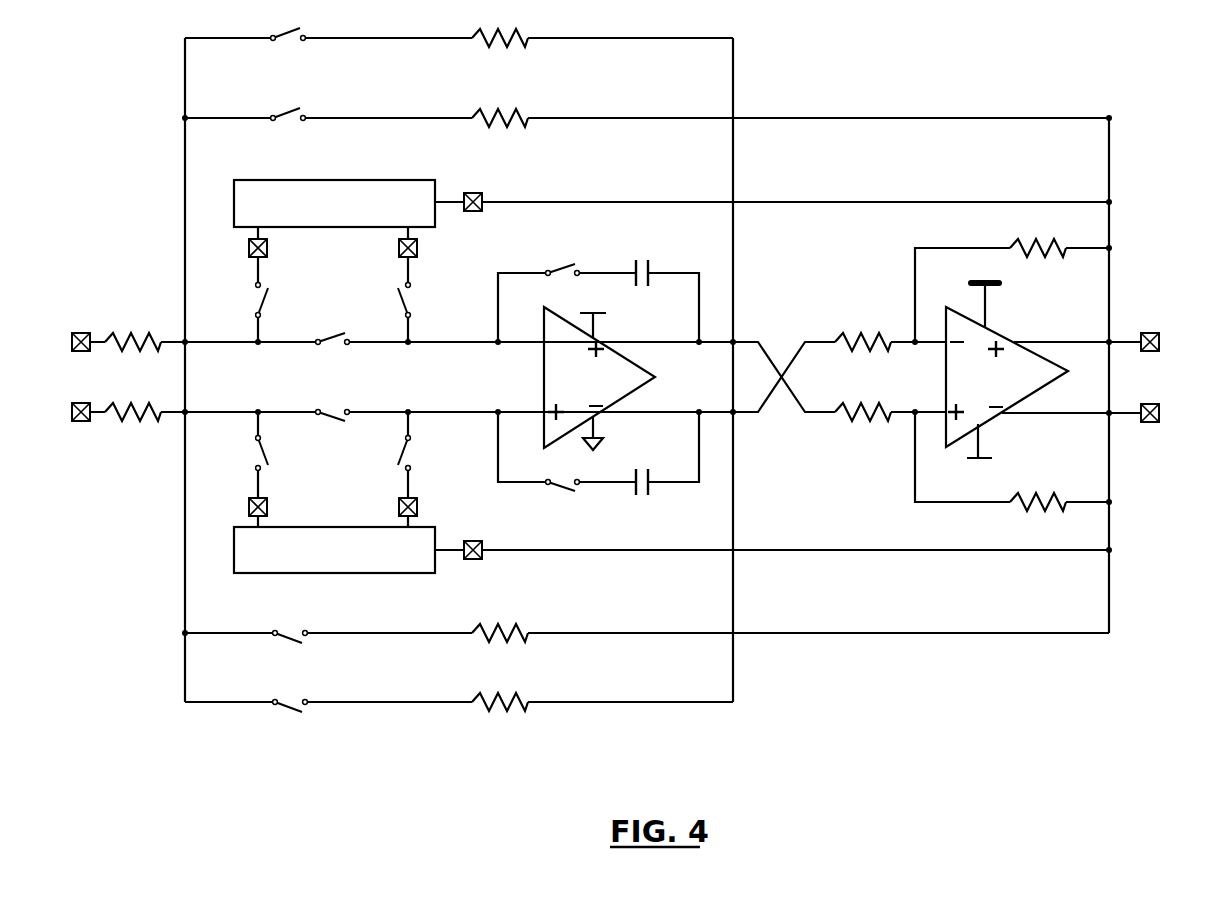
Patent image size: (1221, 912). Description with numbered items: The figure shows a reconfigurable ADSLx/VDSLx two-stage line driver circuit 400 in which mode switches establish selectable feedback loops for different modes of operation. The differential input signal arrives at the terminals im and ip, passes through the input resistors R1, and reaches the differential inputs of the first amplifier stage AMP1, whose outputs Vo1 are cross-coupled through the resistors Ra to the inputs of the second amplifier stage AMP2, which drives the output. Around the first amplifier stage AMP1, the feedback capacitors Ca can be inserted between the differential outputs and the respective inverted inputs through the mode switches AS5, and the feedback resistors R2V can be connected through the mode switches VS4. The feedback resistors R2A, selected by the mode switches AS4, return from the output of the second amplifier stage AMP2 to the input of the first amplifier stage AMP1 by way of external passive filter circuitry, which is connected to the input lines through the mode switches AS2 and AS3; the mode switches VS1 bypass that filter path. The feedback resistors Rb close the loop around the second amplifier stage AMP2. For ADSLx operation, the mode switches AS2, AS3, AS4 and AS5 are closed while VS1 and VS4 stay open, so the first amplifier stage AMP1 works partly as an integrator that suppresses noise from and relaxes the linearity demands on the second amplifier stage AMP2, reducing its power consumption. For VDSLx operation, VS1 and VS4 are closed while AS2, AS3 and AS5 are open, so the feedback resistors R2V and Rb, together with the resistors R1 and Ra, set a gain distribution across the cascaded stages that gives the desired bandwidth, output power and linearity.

The reconfigurable two-stage line driver circuit 400 is at (1013, 46).
The negative input terminal im is at (86, 328).
The positive input terminal ip is at (82, 427).
The resistor R1 is at (133, 377).
The feedback resistor R2V is at (500, 370).
The feedback resistor R2A is at (500, 375).
The resistor Ra is at (890, 377).
The feedback resistor Rb is at (1038, 375).
The feedback capacitor Ca is at (643, 377).
The first amplifier output Vo1 is at (778, 377).
The first amplifier stage AMP1 is at (599, 378).
The second amplifier stage AMP2 is at (1007, 370).
The mode switch VS4 is at (289, 370).
The mode switch AS4 is at (289, 375).
The mode switch VS1 is at (333, 377).
The mode switch AS2 is at (244, 377).
The mode switch AS3 is at (423, 377).
The mode switch AS5 is at (562, 380).